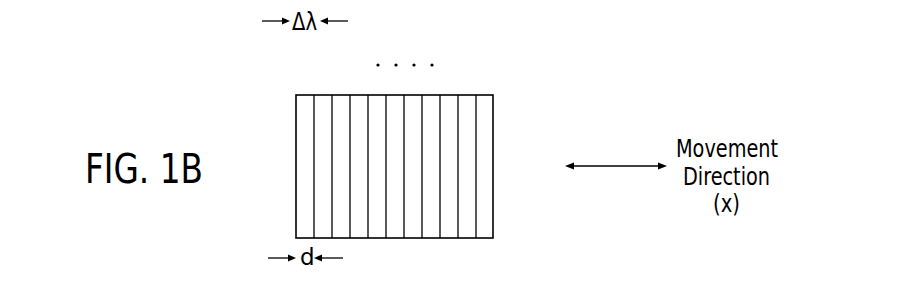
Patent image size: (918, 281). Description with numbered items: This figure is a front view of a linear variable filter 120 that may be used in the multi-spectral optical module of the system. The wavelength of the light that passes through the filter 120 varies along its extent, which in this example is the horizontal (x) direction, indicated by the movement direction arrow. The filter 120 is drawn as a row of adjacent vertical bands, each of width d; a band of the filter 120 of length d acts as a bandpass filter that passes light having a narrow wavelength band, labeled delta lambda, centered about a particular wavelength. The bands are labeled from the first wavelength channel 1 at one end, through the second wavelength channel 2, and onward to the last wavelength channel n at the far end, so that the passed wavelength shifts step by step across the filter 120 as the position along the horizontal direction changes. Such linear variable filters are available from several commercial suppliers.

The linear variable filter 120 is at (528, 108).
The first wavelength channel λ 1 is at (302, 95).
The second wavelength channel λ 2 is at (330, 95).
The n-th wavelength channel λ n is at (483, 95).